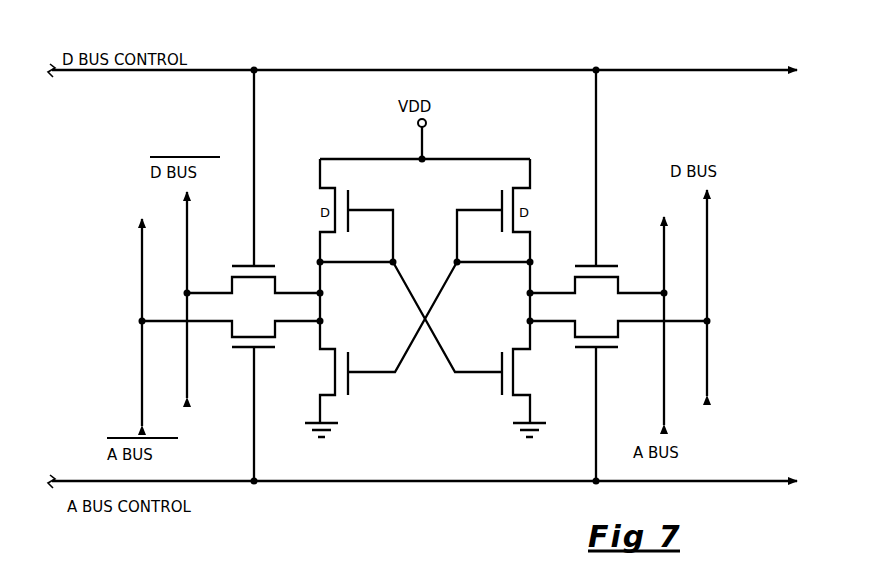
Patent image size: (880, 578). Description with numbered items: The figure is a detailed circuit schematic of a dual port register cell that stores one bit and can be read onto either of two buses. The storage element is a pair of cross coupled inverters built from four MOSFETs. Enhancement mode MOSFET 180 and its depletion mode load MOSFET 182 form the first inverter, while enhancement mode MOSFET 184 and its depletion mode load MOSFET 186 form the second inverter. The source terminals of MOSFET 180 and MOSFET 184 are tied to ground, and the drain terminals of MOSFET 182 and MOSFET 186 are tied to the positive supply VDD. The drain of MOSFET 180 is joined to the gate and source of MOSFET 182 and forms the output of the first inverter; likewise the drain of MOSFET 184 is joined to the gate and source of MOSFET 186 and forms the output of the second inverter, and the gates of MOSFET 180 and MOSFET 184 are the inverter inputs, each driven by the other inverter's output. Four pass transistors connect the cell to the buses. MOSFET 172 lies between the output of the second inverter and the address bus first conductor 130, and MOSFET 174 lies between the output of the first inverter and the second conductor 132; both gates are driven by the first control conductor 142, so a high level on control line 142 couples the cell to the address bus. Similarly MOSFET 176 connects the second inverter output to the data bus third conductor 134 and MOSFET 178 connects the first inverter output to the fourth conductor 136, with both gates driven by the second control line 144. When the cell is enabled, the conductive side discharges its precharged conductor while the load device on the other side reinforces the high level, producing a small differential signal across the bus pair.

The second control line 144 is at (512, 70).
The first control conductor 142 is at (438, 481).
The fourth conductor 136 is at (188, 212).
The third conductor 134 is at (709, 212).
The second conductor 132 is at (141, 395).
The first conductor 130 is at (667, 400).
The MOSFET 178 is at (258, 266).
The MOSFET 174 is at (262, 350).
The MOSFET 176 is at (590, 264).
The MOSFET 172 is at (602, 350).
The depletion mode MOSFET device 182 is at (350, 200).
The depletion mode MOSFET device 186 is at (500, 200).
The enhancement mode MOSFET 180 is at (350, 383).
The enhancement mode MOSFET 184 is at (502, 383).